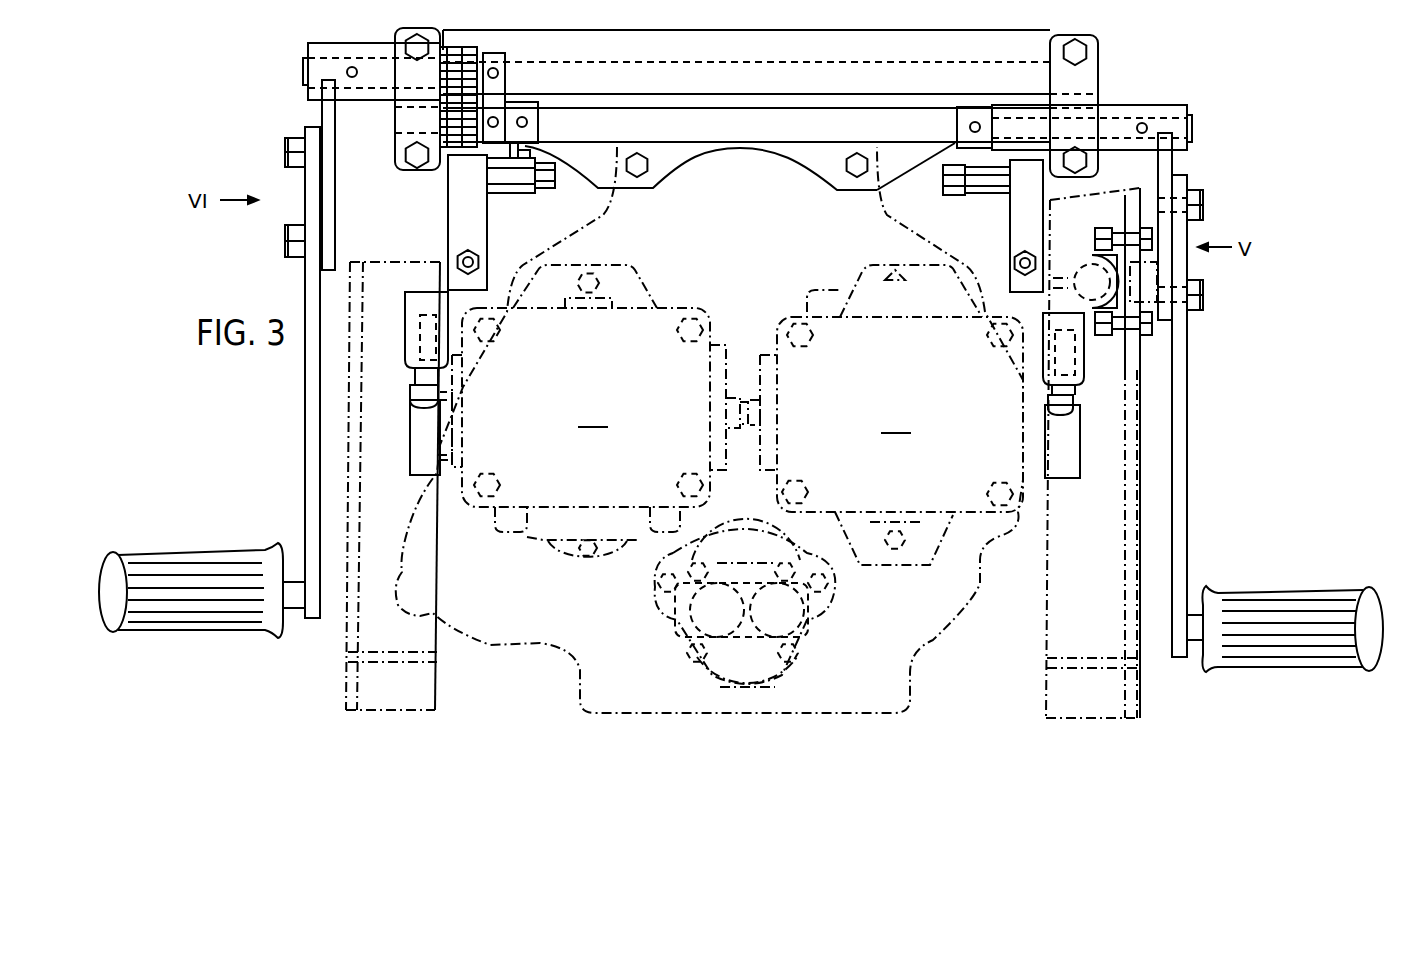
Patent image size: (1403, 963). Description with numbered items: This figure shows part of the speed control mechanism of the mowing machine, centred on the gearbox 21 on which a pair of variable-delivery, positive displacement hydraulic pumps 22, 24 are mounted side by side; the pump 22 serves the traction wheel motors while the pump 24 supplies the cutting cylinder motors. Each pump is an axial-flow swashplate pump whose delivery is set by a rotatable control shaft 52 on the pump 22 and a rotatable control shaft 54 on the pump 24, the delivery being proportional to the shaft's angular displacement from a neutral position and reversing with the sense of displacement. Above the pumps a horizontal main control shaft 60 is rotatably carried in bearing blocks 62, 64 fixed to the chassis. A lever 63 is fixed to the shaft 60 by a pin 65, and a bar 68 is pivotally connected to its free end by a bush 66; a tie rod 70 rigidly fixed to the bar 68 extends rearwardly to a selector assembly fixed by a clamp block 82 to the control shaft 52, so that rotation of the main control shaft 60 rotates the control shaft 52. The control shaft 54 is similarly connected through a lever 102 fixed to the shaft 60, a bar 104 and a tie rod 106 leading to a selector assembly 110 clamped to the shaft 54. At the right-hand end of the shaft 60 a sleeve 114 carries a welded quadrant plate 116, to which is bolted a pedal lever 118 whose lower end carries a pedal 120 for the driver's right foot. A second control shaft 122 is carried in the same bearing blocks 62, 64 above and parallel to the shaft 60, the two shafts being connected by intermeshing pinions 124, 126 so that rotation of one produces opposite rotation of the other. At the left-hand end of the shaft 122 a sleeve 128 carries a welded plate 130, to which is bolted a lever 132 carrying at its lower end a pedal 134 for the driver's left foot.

The gearbox 21 is at (530, 645).
The hydraulic pump 22 is at (886, 415).
The hydraulic pump 24 is at (600, 411).
The control shaft 52 is at (1070, 416).
The control shaft 54 is at (419, 406).
The main control shaft 60 is at (760, 128).
The bearing block 62 is at (402, 170).
The lever 63 is at (930, 159).
The bearing block 64 is at (1098, 170).
The pin 65 is at (975, 110).
The bush 66 is at (972, 190).
The bar 68 is at (1010, 224).
The tie rod 70 is at (1014, 262).
The clamp block 82 is at (1078, 447).
The lever 102 is at (530, 152).
The bar 104 is at (452, 211).
The tie rod 106 is at (457, 257).
The selector assembly 110 is at (410, 458).
The sleeve 114 is at (1154, 118).
The quadrant plate 116 is at (1168, 172).
The pedal lever 118 is at (1178, 438).
The pedal 120 is at (1260, 603).
The second control shaft 122 is at (652, 46).
The pinion 124 is at (506, 74).
The pinion 126 is at (515, 112).
The sleeve 128 is at (375, 98).
The plate 130 is at (334, 188).
The lever 132 is at (305, 435).
The pedal 134 is at (240, 568).